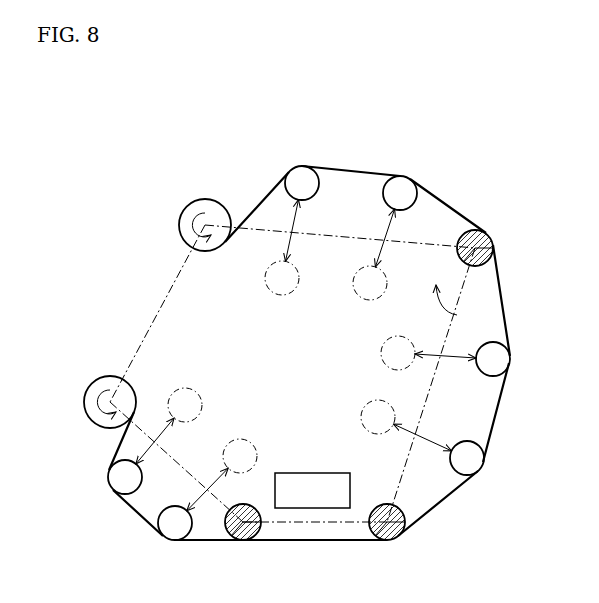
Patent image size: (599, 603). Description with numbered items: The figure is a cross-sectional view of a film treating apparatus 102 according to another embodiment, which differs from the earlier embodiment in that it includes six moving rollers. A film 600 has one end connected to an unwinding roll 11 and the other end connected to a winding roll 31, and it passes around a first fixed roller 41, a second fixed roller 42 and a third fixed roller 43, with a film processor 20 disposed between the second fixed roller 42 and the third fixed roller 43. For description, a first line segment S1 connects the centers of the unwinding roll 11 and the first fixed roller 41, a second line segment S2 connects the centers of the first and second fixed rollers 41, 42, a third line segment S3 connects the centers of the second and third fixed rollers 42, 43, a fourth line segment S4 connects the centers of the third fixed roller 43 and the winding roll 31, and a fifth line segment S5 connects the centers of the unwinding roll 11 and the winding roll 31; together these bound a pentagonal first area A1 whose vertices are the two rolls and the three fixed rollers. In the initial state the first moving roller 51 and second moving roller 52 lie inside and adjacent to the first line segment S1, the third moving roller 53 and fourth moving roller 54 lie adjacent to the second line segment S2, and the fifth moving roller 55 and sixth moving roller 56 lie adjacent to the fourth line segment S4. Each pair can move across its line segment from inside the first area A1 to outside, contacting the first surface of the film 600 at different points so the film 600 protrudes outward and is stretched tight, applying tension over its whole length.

The unwinding roll 11 is at (213, 210).
The winding roll 31 is at (104, 418).
The first fixed roller 41 is at (478, 244).
The second fixed roller 42 is at (393, 527).
The third fixed roller 43 is at (238, 530).
The first moving roller 51 is at (302, 178).
The second moving roller 52 is at (401, 188).
The third moving roller 53 is at (497, 363).
The fourth moving roller 54 is at (473, 462).
The fifth moving roller 55 is at (172, 530).
The sixth moving roller 56 is at (122, 480).
The film processor 20 is at (312, 482).
The film treating apparatus 102 is at (358, 123).
The film 600 is at (435, 195).
The first line segment S1 is at (340, 236).
The second line segment S2 is at (434, 384).
The third line segment S3 is at (316, 525).
The fourth line segment S4 is at (185, 470).
The fifth line segment S5 is at (160, 310).
The first area A1 is at (457, 315).